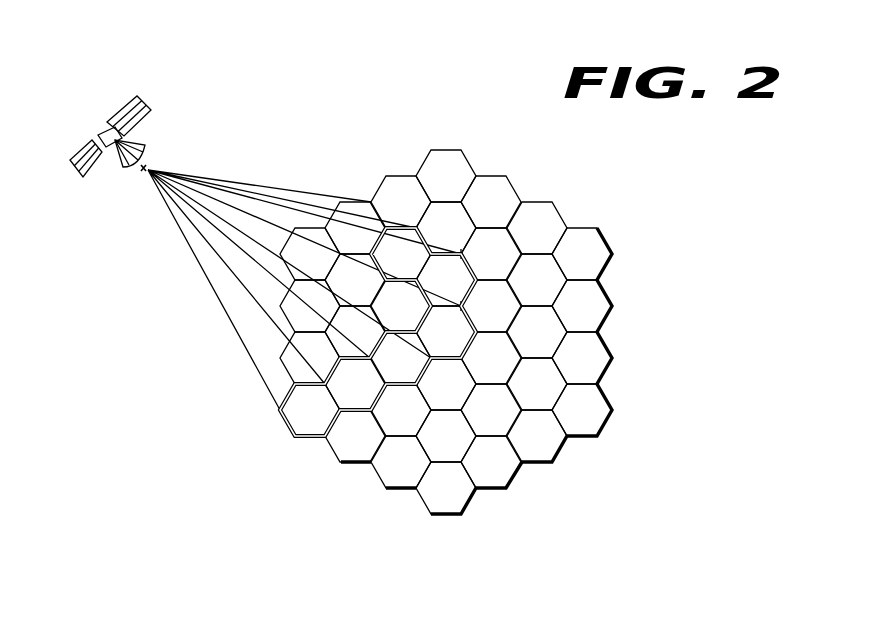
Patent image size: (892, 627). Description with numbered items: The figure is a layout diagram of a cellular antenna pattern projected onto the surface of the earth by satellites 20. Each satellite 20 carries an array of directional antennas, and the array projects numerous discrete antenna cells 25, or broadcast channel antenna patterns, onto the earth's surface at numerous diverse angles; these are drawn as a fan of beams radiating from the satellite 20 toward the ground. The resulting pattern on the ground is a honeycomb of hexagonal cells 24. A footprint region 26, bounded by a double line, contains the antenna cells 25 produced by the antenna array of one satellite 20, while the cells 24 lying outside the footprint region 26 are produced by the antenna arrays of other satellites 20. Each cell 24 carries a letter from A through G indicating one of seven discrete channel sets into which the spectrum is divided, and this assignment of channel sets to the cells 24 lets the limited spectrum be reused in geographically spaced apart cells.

The satellite 20 is at (141, 97).
The cells 24 is at (393, 287).
The antenna cells 25 is at (205, 221).
The footprint region 26 is at (289, 413).